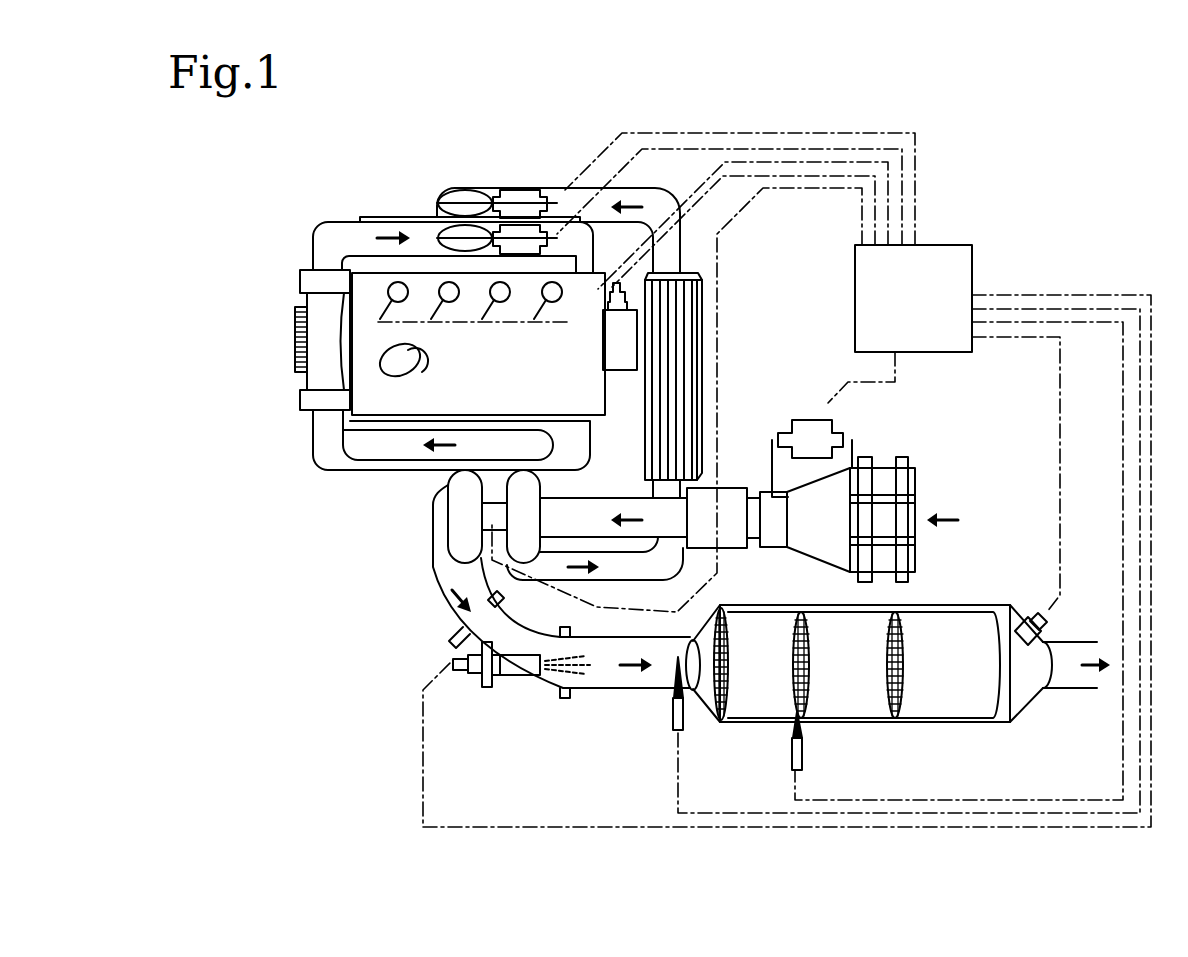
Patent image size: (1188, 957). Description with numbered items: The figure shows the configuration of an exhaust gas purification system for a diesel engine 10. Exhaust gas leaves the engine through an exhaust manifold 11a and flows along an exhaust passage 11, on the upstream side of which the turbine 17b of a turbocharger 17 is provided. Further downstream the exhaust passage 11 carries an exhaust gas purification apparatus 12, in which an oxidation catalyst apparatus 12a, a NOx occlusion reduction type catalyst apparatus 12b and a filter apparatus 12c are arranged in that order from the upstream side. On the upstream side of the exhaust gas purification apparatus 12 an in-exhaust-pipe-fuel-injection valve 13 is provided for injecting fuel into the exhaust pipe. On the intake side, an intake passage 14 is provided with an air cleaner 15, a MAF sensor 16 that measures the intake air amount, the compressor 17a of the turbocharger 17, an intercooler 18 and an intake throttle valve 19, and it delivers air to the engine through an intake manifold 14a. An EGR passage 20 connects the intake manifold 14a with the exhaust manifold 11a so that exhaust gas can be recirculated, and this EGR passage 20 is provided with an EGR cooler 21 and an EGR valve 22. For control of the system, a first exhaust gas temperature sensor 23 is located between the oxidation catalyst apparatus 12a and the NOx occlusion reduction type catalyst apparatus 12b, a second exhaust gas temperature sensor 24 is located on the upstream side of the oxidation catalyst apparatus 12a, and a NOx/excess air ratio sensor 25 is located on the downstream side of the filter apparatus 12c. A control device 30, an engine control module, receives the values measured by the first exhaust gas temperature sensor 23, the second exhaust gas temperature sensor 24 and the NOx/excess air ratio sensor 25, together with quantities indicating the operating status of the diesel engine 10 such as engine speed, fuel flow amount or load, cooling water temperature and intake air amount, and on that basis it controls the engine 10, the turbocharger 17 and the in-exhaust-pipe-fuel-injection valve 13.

The diesel engine 10 is at (468, 391).
The exhaust passage 11 is at (445, 625).
The exhaust manifold 11a is at (373, 467).
The exhaust gas purification apparatus 12 is at (973, 600).
The oxidation catalyst apparatus 12a is at (753, 703).
The NOx occlusion reduction type catalyst apparatus 12b is at (842, 705).
The filter apparatus 12c is at (948, 698).
The in-exhaust-pipe-fuel-injection valve 13 is at (493, 680).
The intake passage 14 is at (683, 237).
The intake manifold 14a is at (398, 217).
The air cleaner 15 is at (885, 470).
The MAF sensor 16 is at (802, 433).
The turbocharger 17 is at (493, 513).
The compressor 17a is at (520, 543).
The turbine 17b is at (467, 487).
The intercooler 18 is at (707, 353).
The intake throttle valve 19 is at (525, 193).
The EGR passage 20 is at (342, 228).
The EGR cooler 21 is at (317, 332).
The EGR valve 22 is at (527, 233).
The first exhaust gas temperature sensor 23 is at (802, 770).
The second exhaust gas temperature sensor 24 is at (683, 730).
The NOx/excess air ratio sensor 25 is at (1053, 617).
The control device 30 is at (900, 313).